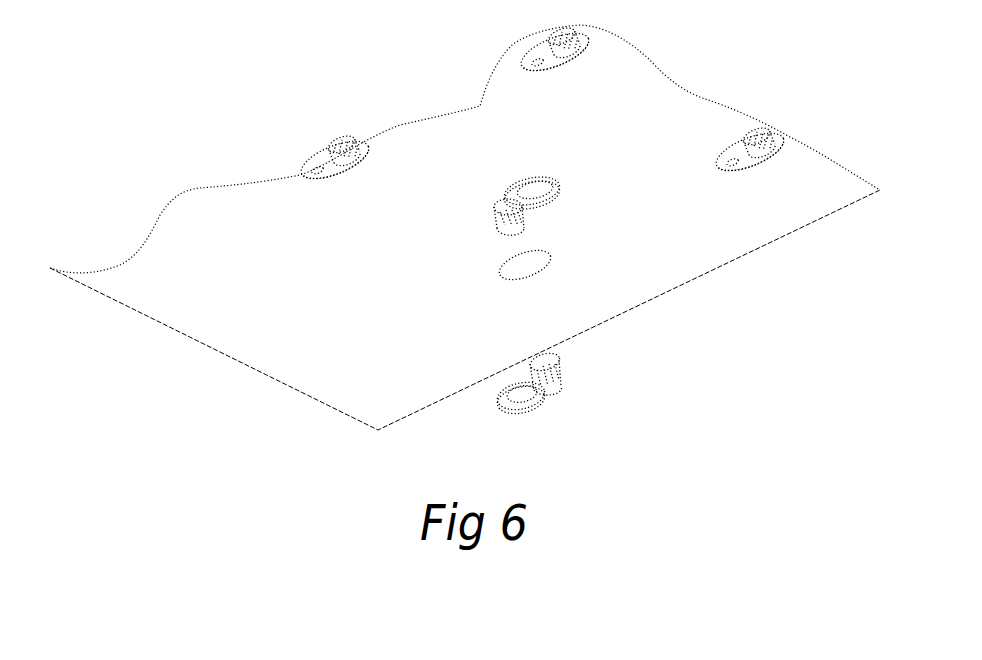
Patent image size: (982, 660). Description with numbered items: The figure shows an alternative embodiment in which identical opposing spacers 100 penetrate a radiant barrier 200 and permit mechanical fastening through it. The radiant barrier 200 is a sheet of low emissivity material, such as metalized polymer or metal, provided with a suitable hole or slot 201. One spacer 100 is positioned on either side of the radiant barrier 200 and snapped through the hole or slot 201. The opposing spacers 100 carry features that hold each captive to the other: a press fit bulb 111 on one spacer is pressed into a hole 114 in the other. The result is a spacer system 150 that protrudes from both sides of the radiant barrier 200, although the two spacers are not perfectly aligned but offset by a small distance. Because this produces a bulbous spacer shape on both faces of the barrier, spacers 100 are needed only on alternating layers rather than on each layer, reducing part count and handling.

The spacer 100 is at (474, 284).
The press fit bulb 111 is at (557, 370).
The hole 114 is at (520, 197).
The spacer system 150 is at (773, 126).
The radiant barrier 200 is at (333, 330).
The hole or slot 201 is at (550, 268).